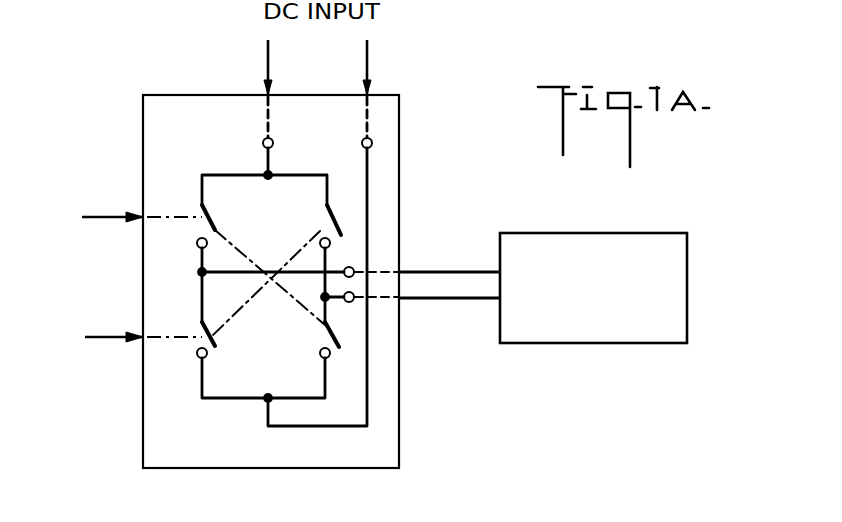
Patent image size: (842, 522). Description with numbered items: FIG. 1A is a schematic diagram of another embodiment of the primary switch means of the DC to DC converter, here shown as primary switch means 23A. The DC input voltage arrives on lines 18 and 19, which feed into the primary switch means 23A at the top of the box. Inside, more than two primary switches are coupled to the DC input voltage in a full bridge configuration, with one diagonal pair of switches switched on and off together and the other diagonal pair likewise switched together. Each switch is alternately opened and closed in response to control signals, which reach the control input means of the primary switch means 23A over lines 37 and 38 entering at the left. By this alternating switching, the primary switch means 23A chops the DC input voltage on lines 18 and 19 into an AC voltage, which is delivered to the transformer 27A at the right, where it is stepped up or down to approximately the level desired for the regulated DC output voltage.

The line 18 is at (367, 52).
The line 19 is at (268, 50).
The primary switch means 23A is at (399, 428).
The transformer 27A is at (687, 245).
The line 37 is at (101, 216).
The line 38 is at (105, 336).